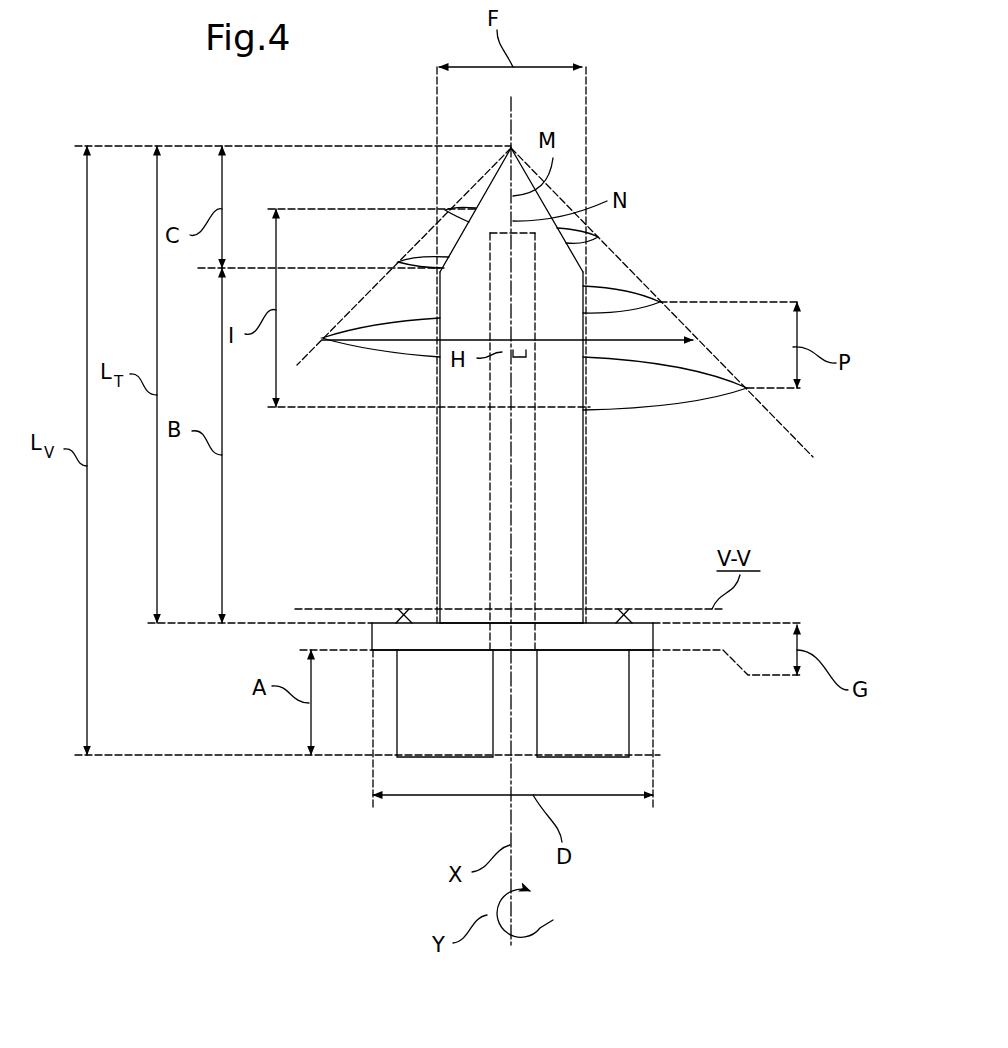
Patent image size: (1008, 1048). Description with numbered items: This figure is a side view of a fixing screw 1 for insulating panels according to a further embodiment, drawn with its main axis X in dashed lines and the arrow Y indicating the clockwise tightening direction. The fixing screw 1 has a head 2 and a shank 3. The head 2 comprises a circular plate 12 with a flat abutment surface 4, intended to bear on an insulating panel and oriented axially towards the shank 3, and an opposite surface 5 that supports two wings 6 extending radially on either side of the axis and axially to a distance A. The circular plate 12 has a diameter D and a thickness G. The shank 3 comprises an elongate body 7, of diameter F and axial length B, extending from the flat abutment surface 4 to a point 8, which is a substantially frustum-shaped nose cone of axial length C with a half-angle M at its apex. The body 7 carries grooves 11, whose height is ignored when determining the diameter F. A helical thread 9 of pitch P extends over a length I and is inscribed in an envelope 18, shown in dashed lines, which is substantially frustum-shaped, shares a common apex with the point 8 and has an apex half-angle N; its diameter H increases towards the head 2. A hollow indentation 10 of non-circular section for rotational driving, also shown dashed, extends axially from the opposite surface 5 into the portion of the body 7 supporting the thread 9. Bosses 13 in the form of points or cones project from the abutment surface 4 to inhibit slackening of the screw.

The fixing screw 1 is at (817, 537).
The head 2 is at (715, 715).
The shank 3 is at (668, 462).
The flat abutment surface 4 is at (455, 622).
The opposite surface 5 is at (385, 650).
The drive wing 6 is at (417, 733).
The elongate body 7 is at (457, 488).
The point 8 is at (468, 250).
The helical thread 9 is at (370, 353).
The hollow indentation 10 is at (533, 548).
The grooves 11 is at (437, 528).
The circular plate 12 is at (640, 640).
The bosses 13 is at (403, 612).
The envelope 18 is at (610, 250).